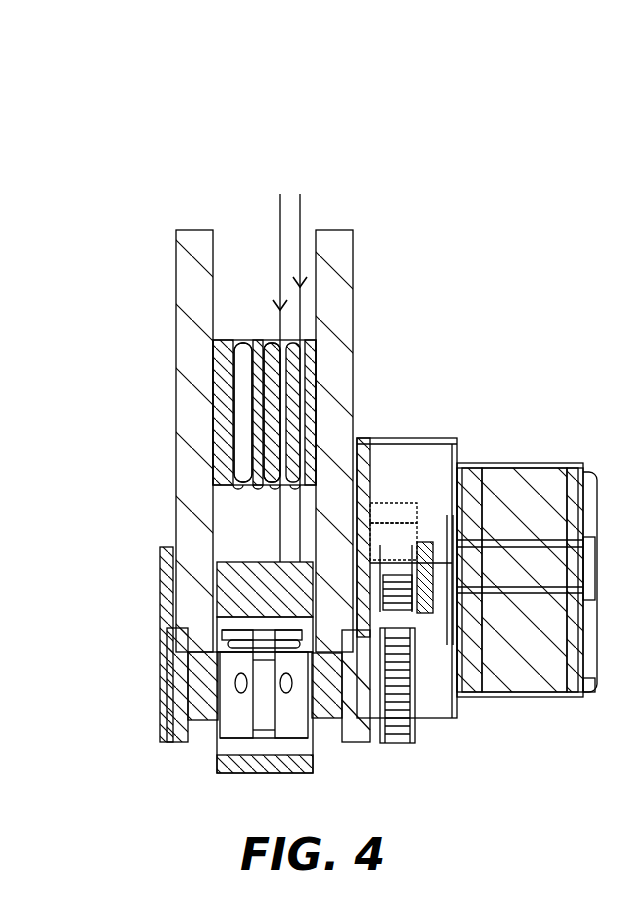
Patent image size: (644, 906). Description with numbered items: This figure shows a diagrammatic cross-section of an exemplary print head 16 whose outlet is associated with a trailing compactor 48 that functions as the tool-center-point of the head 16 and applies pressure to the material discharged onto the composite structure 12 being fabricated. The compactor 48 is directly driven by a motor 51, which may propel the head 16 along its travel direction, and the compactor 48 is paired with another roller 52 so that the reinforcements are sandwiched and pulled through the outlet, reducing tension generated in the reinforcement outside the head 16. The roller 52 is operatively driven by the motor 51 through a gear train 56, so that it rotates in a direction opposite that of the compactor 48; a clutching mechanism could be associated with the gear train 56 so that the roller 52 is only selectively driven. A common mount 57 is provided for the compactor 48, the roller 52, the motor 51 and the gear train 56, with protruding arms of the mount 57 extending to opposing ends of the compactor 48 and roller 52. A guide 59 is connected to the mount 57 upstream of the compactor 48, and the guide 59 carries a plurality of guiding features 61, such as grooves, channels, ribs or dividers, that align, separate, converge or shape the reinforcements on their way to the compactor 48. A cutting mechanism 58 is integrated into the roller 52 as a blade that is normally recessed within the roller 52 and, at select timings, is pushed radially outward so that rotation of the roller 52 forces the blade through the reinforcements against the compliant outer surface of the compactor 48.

The print head 16 is at (181, 118).
The common mount 57 is at (192, 362).
The guide 59 is at (247, 376).
The guiding features 61 is at (258, 410).
The trailing compactor 48 is at (275, 602).
The cutting mechanism 58 is at (242, 641).
The roller 52 is at (225, 748).
The composite structure 12 is at (303, 802).
The gear train 56 is at (415, 722).
The motor 51 is at (533, 651).